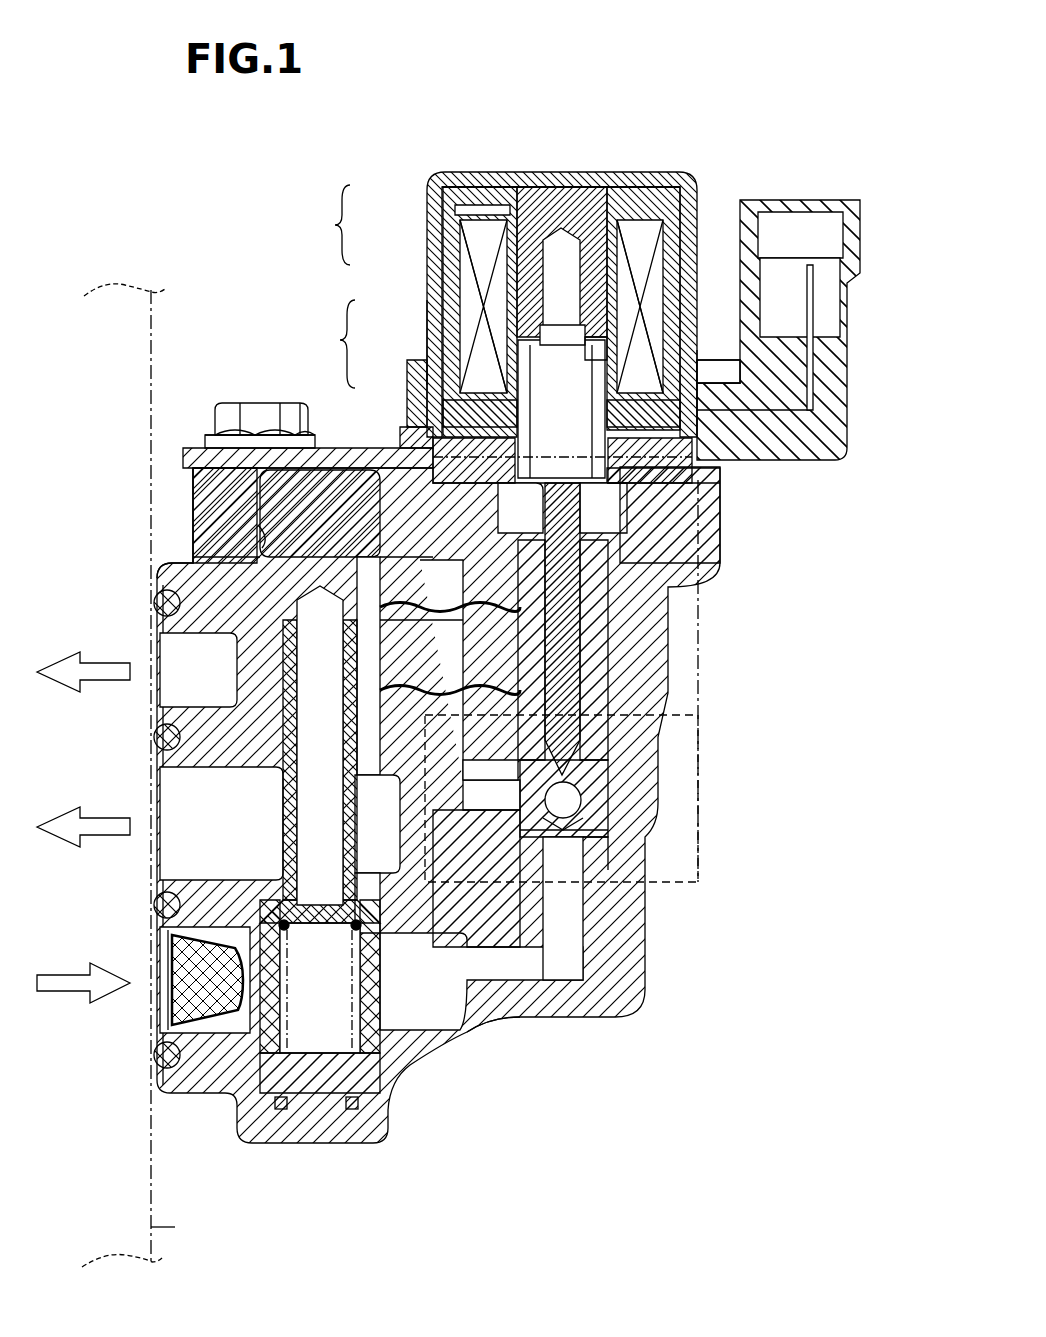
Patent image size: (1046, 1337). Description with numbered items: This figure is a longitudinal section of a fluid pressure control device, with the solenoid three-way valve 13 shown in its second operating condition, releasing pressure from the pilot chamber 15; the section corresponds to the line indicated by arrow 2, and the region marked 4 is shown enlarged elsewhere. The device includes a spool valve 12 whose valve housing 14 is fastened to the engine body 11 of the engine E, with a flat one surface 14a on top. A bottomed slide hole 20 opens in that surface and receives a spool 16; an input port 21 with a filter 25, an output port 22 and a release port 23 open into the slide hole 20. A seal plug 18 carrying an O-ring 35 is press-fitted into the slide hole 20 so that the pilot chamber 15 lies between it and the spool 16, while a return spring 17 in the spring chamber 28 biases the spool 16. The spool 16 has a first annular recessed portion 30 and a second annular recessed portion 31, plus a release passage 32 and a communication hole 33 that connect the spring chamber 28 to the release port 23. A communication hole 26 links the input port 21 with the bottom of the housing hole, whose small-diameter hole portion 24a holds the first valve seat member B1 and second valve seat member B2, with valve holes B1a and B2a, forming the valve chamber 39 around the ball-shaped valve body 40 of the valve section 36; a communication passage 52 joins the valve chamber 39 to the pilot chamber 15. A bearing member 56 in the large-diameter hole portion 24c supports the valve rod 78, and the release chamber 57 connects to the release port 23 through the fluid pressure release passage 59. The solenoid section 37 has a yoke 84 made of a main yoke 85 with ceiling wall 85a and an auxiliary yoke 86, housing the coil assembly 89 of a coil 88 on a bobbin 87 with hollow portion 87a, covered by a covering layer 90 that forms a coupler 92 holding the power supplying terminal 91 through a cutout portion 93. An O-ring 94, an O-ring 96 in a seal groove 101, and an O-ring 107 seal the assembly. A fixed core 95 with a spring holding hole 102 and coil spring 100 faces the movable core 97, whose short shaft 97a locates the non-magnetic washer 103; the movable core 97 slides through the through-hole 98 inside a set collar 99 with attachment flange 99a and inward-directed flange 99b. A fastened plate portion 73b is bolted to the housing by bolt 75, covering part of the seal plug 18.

The view direction arrow 2 is at (527, 114).
The enlarged view region 4 is at (700, 882).
The engine body 11 is at (128, 1160).
The spool valve 12 is at (385, 995).
The solenoid three-way valve 13 is at (645, 168).
The valve housing 14 is at (652, 1012).
The one surface 14a is at (215, 438).
The pilot chamber 15 is at (235, 578).
The spool 16 is at (283, 812).
The return spring 17 is at (345, 1110).
The seal plug 18 is at (330, 472).
The slide hole 20 is at (390, 922).
The input port 21 is at (215, 1045).
The output port 22 is at (180, 858).
The release port 23 is at (178, 696).
The small-diameter hole portion 24a is at (600, 772).
The large-diameter hole portion 24c is at (545, 655).
The filter 25 is at (185, 990).
The communication hole 26 is at (498, 975).
The spring chamber 28 is at (332, 1012).
The first annular recessed portion 30 is at (283, 862).
The second annular recessed portion 31 is at (235, 645).
The release passage 32 is at (377, 854).
The communication hole 33 is at (320, 745).
The O-ring 35 is at (258, 540).
The valve section 36 is at (582, 800).
The solenoid section 37 is at (612, 500).
The valve chamber 39 is at (590, 830).
The valve body 40 is at (563, 830).
The communication passage 52 is at (460, 820).
The bearing member 56 is at (520, 620).
The release chamber 57 is at (520, 705).
The fluid pressure release passage 59 is at (398, 690).
The fastened plate portion 73b is at (248, 403).
The bolt 75 is at (275, 400).
The valve rod 78 is at (580, 682).
The yoke 84 is at (334, 344).
The main yoke 85 is at (422, 320).
The ceiling wall 85a is at (578, 172).
The auxiliary yoke 86 is at (412, 422).
The bobbin 87 is at (450, 225).
The hollow portion 87a is at (470, 320).
The coil 88 is at (450, 265).
The coil assembly 89 is at (329, 225).
The covering layer 90 is at (697, 320).
The power supplying terminal 91 is at (826, 300).
The coupler 92 is at (850, 236).
The cutout portion 93 is at (720, 370).
The O-ring 94 is at (720, 462).
The fixed core 95 is at (576, 224).
The O-ring 96 is at (485, 190).
The movable core 97 is at (567, 421).
The short shaft 97a is at (560, 348).
The through-hole 98 is at (562, 508).
The set collar 99 is at (418, 448).
The attachment flange 99a is at (465, 425).
The inward-directed flange 99b is at (580, 478).
The coil spring 100 is at (610, 398).
The seal groove 101 is at (478, 200).
The spring holding hole 102 is at (640, 310).
The non-magnetic washer 103 is at (597, 365).
The O-ring 107 is at (718, 520).
The first valve seat member B1 is at (518, 765).
The valve hole B1a is at (608, 740).
The second valve seat member B2 is at (518, 858).
The valve hole B2a is at (600, 835).
The engine E is at (151, 1227).